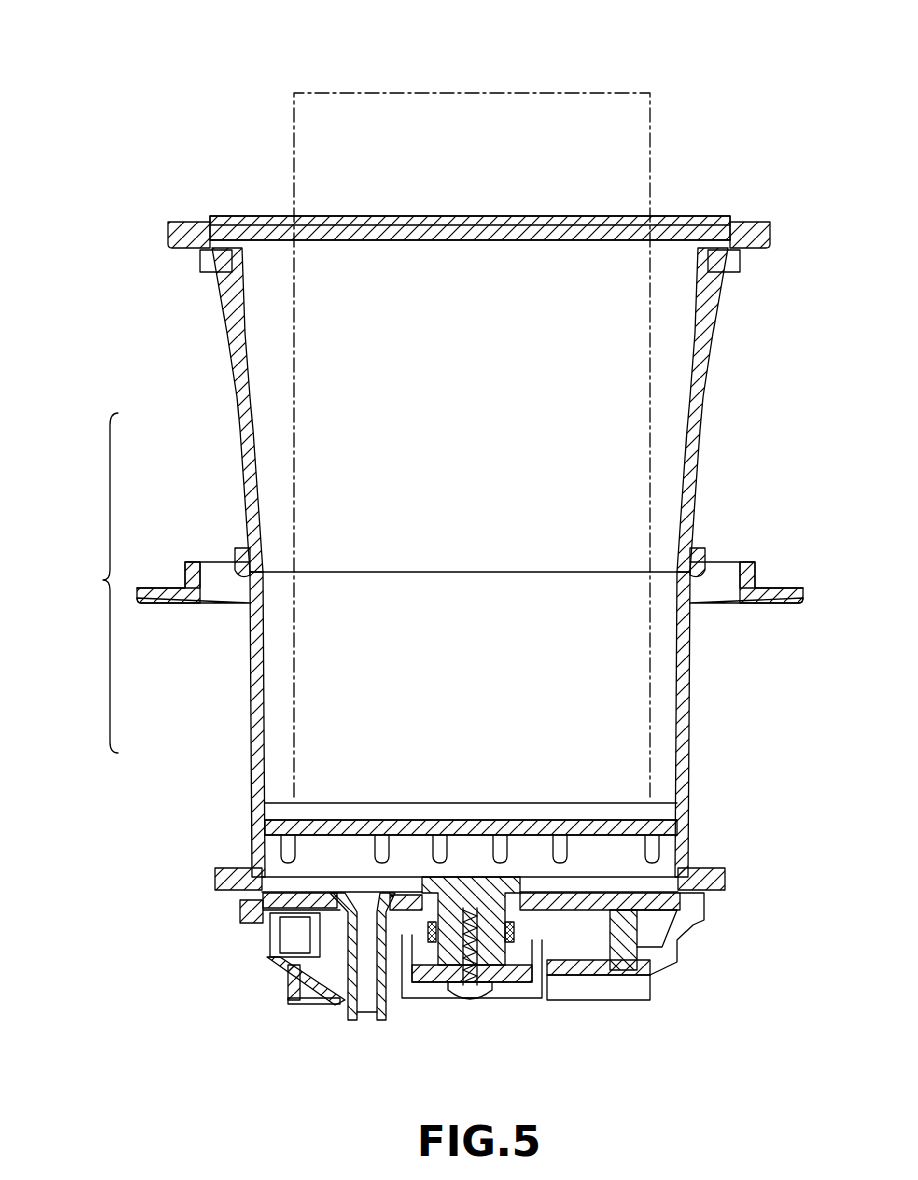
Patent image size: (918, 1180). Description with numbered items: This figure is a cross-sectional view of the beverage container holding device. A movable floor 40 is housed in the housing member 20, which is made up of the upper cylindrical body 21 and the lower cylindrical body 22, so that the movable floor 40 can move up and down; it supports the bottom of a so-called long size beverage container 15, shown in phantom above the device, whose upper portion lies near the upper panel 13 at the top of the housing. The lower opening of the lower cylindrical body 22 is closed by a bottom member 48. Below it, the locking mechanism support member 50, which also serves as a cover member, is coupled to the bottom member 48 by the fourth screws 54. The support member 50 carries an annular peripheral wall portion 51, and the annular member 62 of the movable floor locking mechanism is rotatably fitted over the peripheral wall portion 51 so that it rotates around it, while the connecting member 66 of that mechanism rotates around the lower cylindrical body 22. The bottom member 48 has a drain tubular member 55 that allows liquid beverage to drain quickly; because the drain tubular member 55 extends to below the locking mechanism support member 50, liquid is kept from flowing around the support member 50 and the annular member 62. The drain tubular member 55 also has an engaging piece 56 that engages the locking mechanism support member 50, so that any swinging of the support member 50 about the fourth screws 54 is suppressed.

The upper panel 13 is at (745, 252).
The beverage container 15 is at (470, 93).
The housing member 20 is at (91, 583).
The upper cylindrical body 21 is at (238, 432).
The lower cylindrical body 22 is at (250, 748).
The movable floor 40 is at (470, 820).
The bottom member 48 is at (728, 882).
The locking mechanism support member 50 is at (650, 995).
The peripheral wall portion 51 is at (568, 945).
The fourth screws 54 is at (468, 1005).
The drain tubular member 55 is at (388, 1012).
The engaging piece 56 is at (330, 1004).
The annular member 62 is at (645, 938).
The connecting member 66 is at (775, 603).